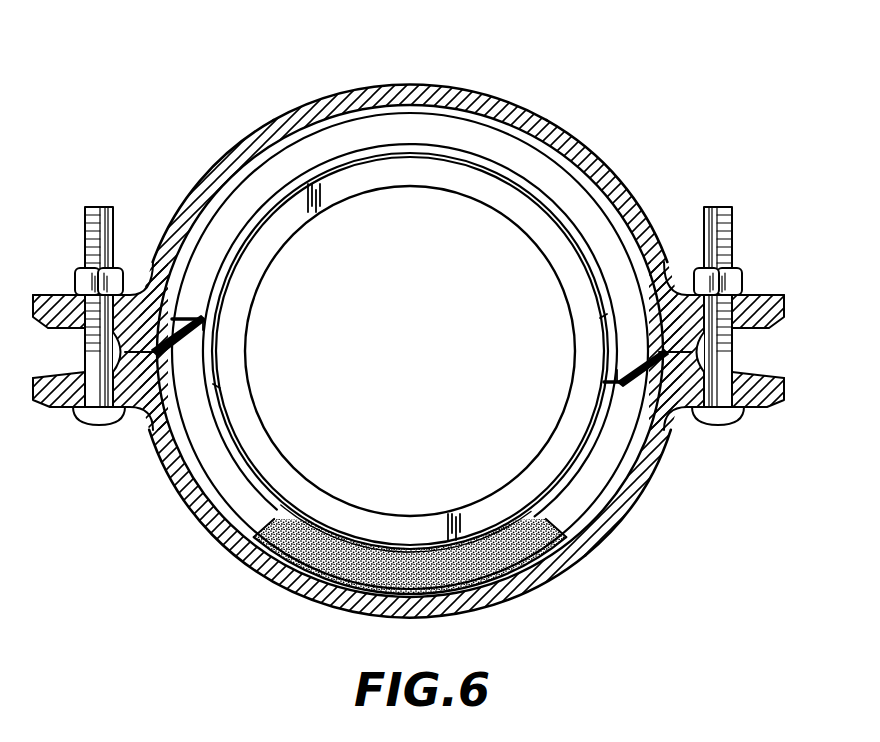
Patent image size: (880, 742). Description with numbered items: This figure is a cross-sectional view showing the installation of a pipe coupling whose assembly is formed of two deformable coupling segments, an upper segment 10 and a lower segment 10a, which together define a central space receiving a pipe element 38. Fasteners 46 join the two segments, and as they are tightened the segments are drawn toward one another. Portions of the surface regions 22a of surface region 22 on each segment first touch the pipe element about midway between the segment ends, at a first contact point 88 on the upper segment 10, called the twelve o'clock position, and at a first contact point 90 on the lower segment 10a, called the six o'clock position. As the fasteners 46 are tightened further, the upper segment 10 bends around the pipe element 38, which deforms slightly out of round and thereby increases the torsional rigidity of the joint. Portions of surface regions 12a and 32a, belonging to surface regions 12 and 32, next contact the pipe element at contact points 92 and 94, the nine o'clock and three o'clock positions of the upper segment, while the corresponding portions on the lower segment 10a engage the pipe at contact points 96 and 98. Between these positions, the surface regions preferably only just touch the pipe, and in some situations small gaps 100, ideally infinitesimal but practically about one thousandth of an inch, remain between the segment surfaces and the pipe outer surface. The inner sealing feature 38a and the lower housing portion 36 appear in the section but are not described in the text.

The coupling segment 10 is at (556, 118).
The lower coupling segment 10a is at (653, 479).
The surface region 12 is at (198, 257).
The surface region portion 12a is at (217, 290).
The surface region 22 is at (417, 124).
The surface region portion 22a is at (426, 148).
The surface region 32 is at (618, 283).
The surface region portion 32a is at (213, 350).
The lower housing segment 36 is at (553, 568).
The pipe element 38 is at (567, 275).
The gasket sealing lip 38a is at (515, 190).
The fastener 46 is at (733, 347).
The first contact point 88 is at (404, 157).
The first contact point 90 is at (413, 548).
The contact point 92 is at (222, 297).
The contact point 94 is at (600, 358).
The contact point 96 is at (225, 386).
The contact point 98 is at (570, 408).
The gap 100 is at (280, 187).